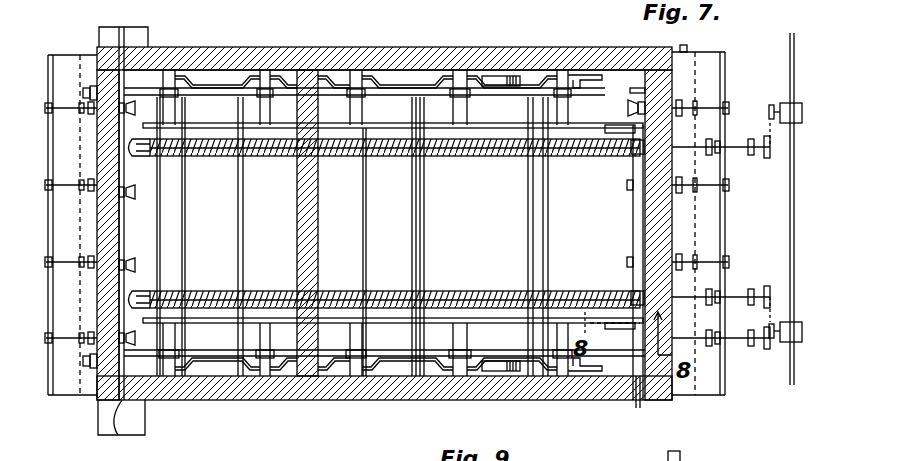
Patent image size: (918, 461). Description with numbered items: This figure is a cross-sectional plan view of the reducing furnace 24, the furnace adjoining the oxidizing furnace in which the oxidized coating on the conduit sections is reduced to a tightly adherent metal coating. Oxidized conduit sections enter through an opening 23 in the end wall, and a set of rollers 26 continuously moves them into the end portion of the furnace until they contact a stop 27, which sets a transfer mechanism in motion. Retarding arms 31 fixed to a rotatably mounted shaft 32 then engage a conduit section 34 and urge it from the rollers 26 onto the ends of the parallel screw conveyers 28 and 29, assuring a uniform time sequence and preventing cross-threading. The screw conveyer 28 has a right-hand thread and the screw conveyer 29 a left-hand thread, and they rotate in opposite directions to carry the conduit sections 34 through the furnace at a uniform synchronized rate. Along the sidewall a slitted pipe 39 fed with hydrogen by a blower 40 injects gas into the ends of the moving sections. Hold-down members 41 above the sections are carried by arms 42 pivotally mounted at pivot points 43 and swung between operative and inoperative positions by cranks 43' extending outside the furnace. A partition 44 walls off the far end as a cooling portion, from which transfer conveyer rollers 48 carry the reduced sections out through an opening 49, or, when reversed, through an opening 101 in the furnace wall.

In FIG. 7, the opening 49 is at (128, 45).
In FIG. 7, the cranks 43' is at (72, 225).
In FIG. 7, the pivot points 43 is at (365, 225).
In FIG. 7, the pipe 39 is at (410, 80).
In FIG. 7, the blower 40 is at (495, 77).
In FIG. 7, the stop 27 is at (630, 91).
In FIG. 7, the rollers 26 is at (627, 108).
In FIG. 7, the retarding arms 31 is at (635, 126).
In FIG. 7, the arms 42 is at (356, 108).
In FIG. 7, the hold-down members 41 is at (221, 127).
In FIG. 7, the screw conveyer 28 is at (483, 158).
In FIG. 7, the conduit section 34 is at (196, 227).
In FIG. 7, the partition 44 is at (297, 225).
In FIG. 7, the transfer conveyer rollers 48 is at (126, 197).
In FIG. 7, the shaft 32 is at (633, 224).
In FIG. 7, the screw conveyer 29 is at (476, 297).
In FIG. 9, the screw conveyer 29 is at (695, 451).
In FIG. 7, the reducing furnace 24 is at (303, 400).
In FIG. 7, the opening 101 is at (118, 437).
In FIG. 7, the opening 23 is at (636, 404).